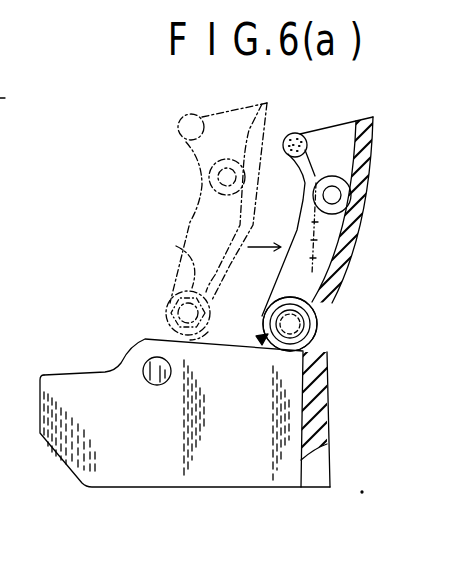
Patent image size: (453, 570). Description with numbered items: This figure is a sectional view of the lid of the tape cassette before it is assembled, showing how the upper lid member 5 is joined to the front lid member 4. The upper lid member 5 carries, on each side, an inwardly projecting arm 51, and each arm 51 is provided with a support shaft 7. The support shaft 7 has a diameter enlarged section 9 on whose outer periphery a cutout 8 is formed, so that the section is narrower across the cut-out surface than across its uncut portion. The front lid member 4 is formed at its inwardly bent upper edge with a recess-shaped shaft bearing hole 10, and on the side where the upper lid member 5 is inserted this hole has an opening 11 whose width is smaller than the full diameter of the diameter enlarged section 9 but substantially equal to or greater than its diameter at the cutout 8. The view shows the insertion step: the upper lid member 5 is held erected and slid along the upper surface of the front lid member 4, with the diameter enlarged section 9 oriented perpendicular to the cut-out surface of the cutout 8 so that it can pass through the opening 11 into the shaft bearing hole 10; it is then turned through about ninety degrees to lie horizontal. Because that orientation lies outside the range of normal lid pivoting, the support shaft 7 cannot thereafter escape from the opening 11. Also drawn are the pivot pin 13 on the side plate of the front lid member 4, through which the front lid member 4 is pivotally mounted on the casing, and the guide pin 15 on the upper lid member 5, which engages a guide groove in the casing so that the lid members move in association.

The front lid member 4 is at (318, 400).
The upper lid member 5 is at (192, 207).
The arm 51 is at (176, 246).
The support shaft 7 is at (172, 327).
The cutout 8 is at (178, 274).
The diameter enlarged section 9 is at (170, 305).
The shaft bearing hole 10 is at (318, 316).
The opening 11 is at (185, 413).
The pivot pin 13 is at (148, 363).
The guide pin 15 is at (181, 117).